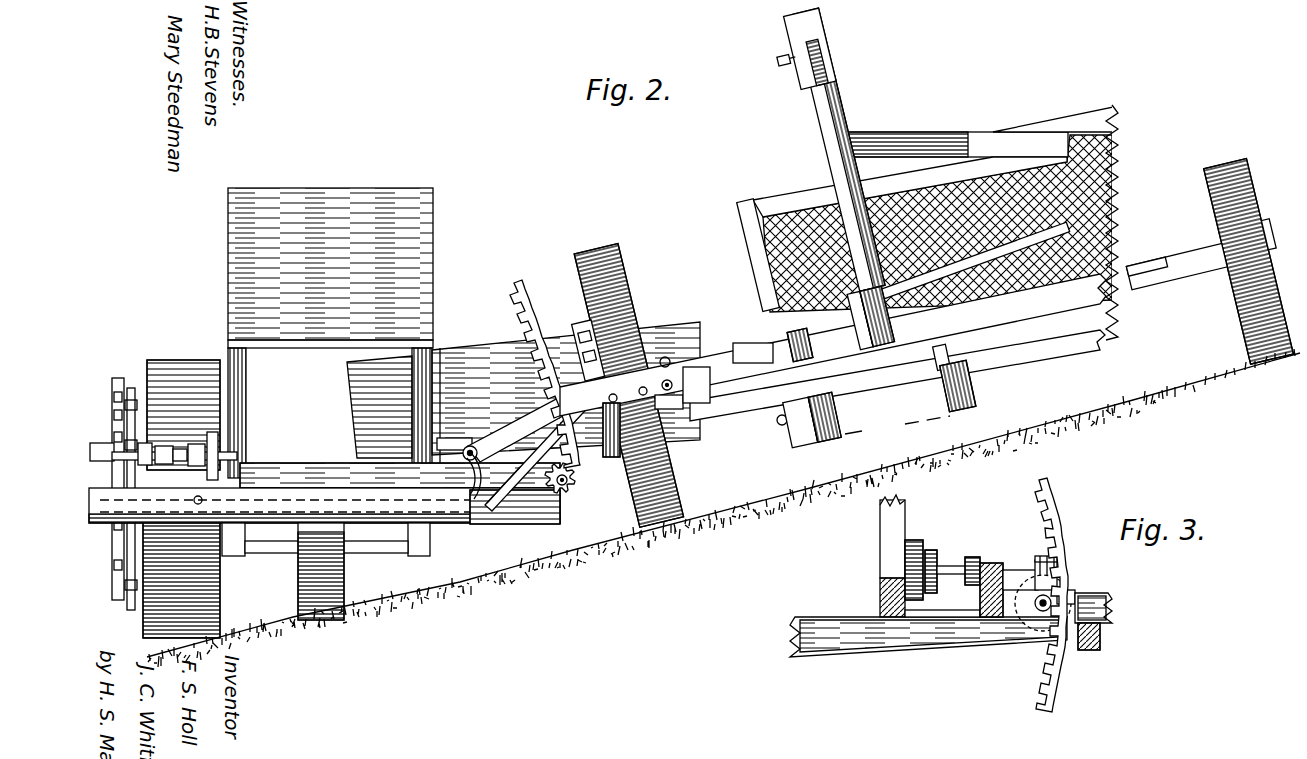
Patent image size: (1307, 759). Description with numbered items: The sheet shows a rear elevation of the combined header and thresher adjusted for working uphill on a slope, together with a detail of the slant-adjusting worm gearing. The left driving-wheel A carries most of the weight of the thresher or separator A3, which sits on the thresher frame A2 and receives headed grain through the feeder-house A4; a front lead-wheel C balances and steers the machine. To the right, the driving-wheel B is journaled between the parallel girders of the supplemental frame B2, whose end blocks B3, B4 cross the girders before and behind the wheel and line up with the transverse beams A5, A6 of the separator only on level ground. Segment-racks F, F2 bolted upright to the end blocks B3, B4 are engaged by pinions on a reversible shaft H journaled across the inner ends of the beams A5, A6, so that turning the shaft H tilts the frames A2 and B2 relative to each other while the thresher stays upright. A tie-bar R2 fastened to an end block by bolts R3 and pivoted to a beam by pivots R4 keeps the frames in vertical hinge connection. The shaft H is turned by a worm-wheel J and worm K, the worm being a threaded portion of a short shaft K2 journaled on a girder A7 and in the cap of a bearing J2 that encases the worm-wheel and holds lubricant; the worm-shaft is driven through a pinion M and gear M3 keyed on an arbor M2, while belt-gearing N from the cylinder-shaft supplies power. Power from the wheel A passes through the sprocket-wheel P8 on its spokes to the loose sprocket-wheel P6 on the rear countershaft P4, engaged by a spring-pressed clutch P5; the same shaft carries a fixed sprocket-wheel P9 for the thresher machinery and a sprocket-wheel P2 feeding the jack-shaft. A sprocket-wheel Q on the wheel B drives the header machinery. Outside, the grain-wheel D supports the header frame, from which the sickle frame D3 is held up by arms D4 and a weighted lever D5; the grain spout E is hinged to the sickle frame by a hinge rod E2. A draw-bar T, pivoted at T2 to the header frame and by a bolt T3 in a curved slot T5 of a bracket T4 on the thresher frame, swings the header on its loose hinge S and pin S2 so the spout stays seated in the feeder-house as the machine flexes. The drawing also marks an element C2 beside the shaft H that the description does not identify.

In FIG. 2, the left driving-wheel A is at (163, 362).
In FIG. 2, the thresher supporting frame A2 is at (324, 509).
In FIG. 3, the thresher supporting frame A2 is at (880, 598).
In FIG. 2, the thresher or separator A3 is at (330, 268).
In FIG. 2, the feeder-house A4 is at (334, 413).
In FIG. 3, the transverse supporting beam A5 is at (960, 648).
In FIG. 2, the transverse supporting beam A6 is at (533, 516).
In FIG. 3, the girder A7 is at (975, 603).
In FIG. 2, the sprocket-wheel P2 is at (114, 381).
In FIG. 2, the countershaft P4 is at (198, 444).
In FIG. 2, the spring-pressed clutch P5 is at (162, 465).
In FIG. 2, the loose sprocket-wheel P6 is at (147, 455).
In FIG. 2, the sprocket-wheel P8 is at (132, 388).
In FIG. 2, the fixed sprocket-wheel P9 is at (219, 448).
In FIG. 2, the tie-bar R2 is at (487, 505).
In FIG. 2, the bolts R3 is at (640, 386).
In FIG. 2, the pivots R4 is at (198, 505).
In FIG. 2, the front lead-wheel C is at (300, 583).
In FIG. 2, the gear wheel C2 is at (556, 471).
In FIG. 2, the reversible rotary shaft H is at (570, 484).
In FIG. 3, the reversible rotary shaft H is at (1040, 612).
In FIG. 2, the grain elevating spout E is at (523, 390).
In FIG. 2, the hinge rod E2 is at (781, 426).
In FIG. 2, the draw-bar T is at (507, 428).
In FIG. 2, the pivot T2 is at (722, 346).
In FIG. 2, the bolt T3 is at (458, 468).
In FIG. 2, the bracket T4 is at (452, 440).
In FIG. 2, the slot T5 is at (478, 480).
In FIG. 3, the segment-rack F is at (1056, 502).
In FIG. 2, the segment-rack F2 is at (520, 282).
In FIG. 2, the sprocket-wheel Q is at (582, 332).
In FIG. 2, the right driving-wheel B is at (605, 250).
In FIG. 2, the supplemental frame B2 is at (605, 440).
In FIG. 3, the supplemental frame B2 is at (1100, 643).
In FIG. 3, the end block B3 is at (1109, 596).
In FIG. 2, the end block B4 is at (670, 378).
In FIG. 2, the loose hinge S is at (700, 375).
In FIG. 2, the pin or bolt S2 is at (665, 356).
In FIG. 2, the outer grain-wheel D is at (1222, 170).
In FIG. 2, the sickle frame D3 is at (1006, 362).
In FIG. 2, the arms D4 is at (897, 431).
In FIG. 2, the weighted lever D5 is at (840, 125).
In FIG. 3, the belt-gearing N is at (905, 545).
In FIG. 3, the pinion M is at (972, 557).
In FIG. 3, the arbor M2 is at (945, 563).
In FIG. 3, the gear M3 is at (930, 550).
In FIG. 3, the worm K is at (1040, 570).
In FIG. 3, the worm-shaft K2 is at (1010, 570).
In FIG. 3, the worm-wheel J is at (1062, 596).
In FIG. 3, the bearing J2 is at (1045, 630).